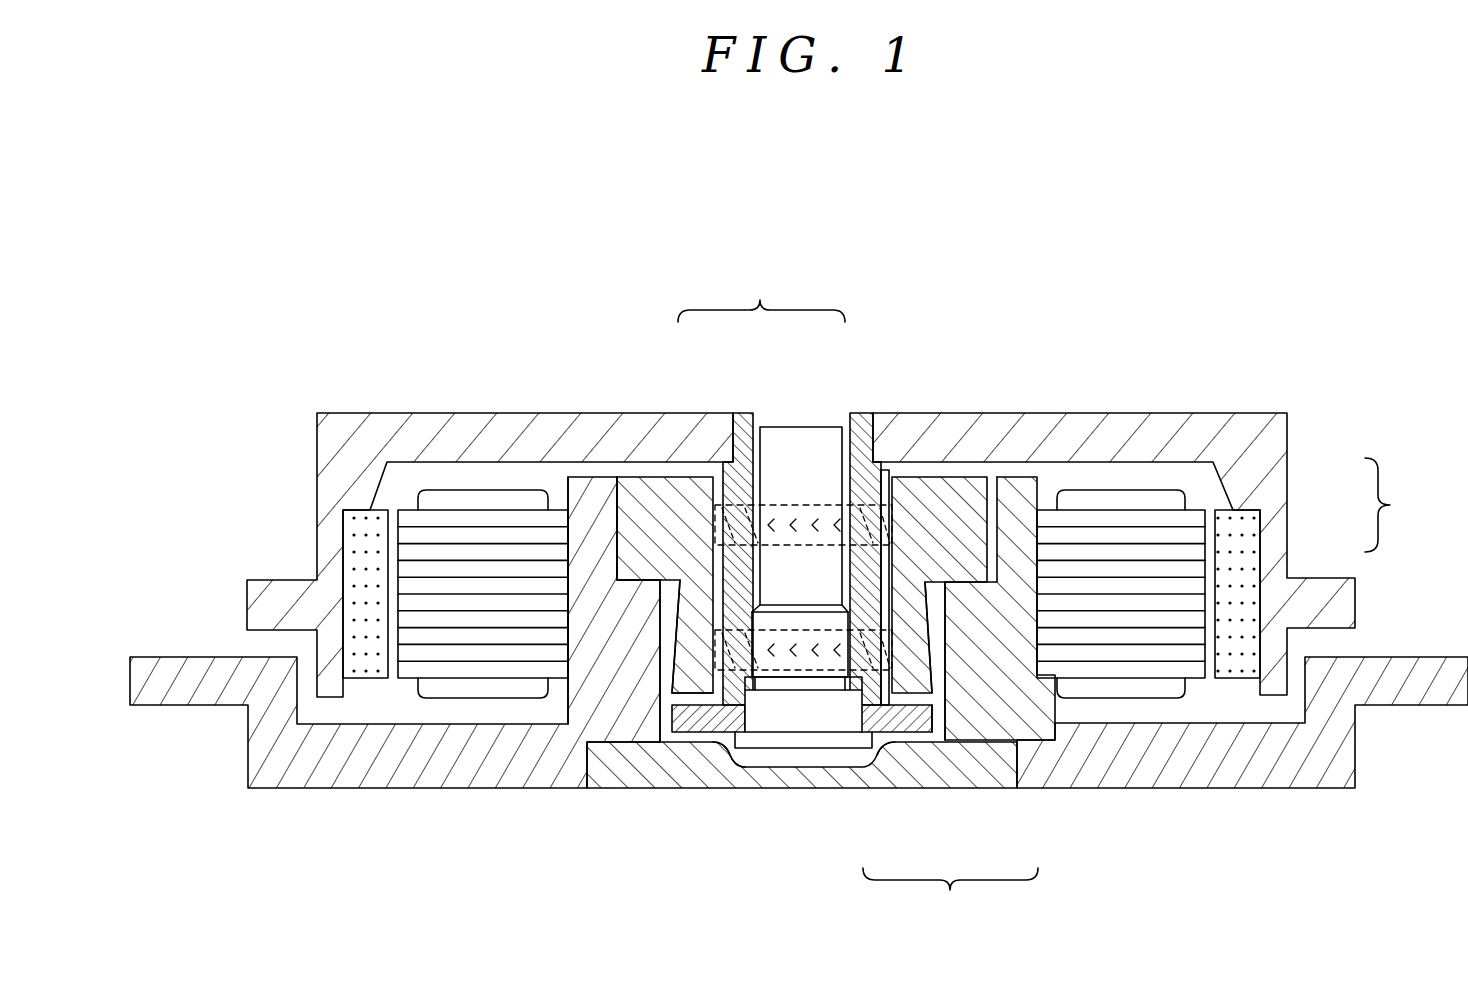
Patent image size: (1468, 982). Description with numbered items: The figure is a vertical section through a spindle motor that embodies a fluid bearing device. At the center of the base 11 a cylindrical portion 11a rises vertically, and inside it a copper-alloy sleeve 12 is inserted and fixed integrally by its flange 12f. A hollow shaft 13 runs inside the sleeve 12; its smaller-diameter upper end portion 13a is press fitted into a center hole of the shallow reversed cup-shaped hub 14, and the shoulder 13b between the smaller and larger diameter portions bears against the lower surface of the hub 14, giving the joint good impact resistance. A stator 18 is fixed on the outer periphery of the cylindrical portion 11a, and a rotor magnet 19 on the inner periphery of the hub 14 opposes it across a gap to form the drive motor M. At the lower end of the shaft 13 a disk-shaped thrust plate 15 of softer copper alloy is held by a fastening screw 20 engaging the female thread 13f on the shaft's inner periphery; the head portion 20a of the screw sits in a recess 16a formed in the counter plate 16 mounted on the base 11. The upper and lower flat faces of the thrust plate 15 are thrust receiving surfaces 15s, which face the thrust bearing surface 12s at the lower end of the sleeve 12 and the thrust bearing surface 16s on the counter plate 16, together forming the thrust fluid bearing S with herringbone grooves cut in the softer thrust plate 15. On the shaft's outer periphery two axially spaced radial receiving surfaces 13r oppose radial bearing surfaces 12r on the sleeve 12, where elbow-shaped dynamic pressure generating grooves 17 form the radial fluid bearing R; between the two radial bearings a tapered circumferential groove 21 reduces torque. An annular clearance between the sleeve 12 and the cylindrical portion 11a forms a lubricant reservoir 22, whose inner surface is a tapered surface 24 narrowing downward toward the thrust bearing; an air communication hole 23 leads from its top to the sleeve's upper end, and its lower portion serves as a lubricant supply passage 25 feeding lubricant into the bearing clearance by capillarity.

The base 11 is at (799, 669).
The cylindrical portion 11a is at (587, 653).
The sleeve 12 is at (629, 514).
The flange 12f is at (633, 547).
The radial bearing surfaces 12r is at (777, 612).
The thrust bearing surface 12s is at (943, 600).
The shaft 13 is at (931, 512).
The upper end portion 13a is at (866, 440).
The shoulder 13b is at (886, 480).
The female thread 13f is at (845, 463).
The radial receiving surfaces 13r is at (728, 520).
The hub 14 is at (343, 462).
The thrust plate 15 is at (697, 723).
The thrust receiving surfaces 15s is at (938, 690).
The counter plate 16 is at (802, 806).
The recess 16a is at (733, 768).
The thrust bearing surface 16s is at (897, 742).
The dynamic pressure generating grooves 17 is at (833, 670).
The stator 18 is at (1148, 533).
The rotor magnet 19 is at (1243, 540).
The fastening screw 20 is at (780, 717).
The head portion 20a is at (807, 742).
The circumferential groove 21 is at (940, 517).
The lubricant reservoir 22 is at (1051, 599).
The air communication hole 23 is at (1012, 530).
The tapered surface 24 is at (948, 640).
The lubricant supply passage 25 is at (905, 705).
The radial fluid bearing R is at (748, 292).
The thrust fluid bearing S is at (940, 923).
The drive motor M is at (880, 578).